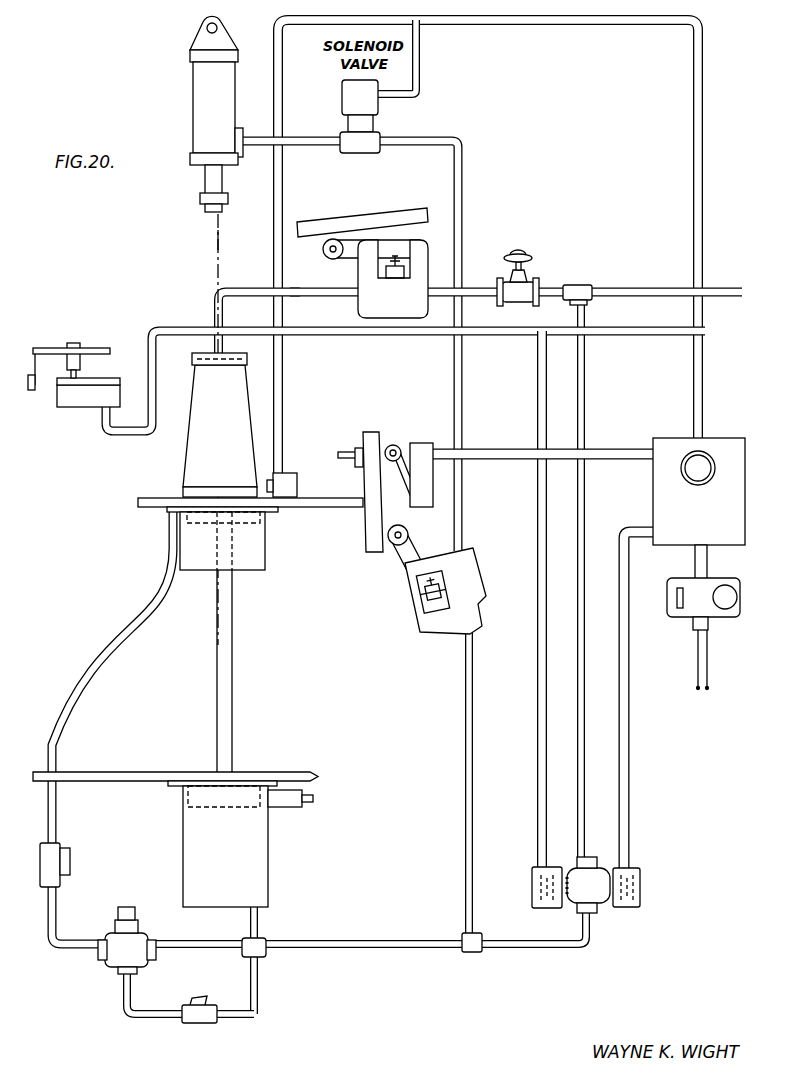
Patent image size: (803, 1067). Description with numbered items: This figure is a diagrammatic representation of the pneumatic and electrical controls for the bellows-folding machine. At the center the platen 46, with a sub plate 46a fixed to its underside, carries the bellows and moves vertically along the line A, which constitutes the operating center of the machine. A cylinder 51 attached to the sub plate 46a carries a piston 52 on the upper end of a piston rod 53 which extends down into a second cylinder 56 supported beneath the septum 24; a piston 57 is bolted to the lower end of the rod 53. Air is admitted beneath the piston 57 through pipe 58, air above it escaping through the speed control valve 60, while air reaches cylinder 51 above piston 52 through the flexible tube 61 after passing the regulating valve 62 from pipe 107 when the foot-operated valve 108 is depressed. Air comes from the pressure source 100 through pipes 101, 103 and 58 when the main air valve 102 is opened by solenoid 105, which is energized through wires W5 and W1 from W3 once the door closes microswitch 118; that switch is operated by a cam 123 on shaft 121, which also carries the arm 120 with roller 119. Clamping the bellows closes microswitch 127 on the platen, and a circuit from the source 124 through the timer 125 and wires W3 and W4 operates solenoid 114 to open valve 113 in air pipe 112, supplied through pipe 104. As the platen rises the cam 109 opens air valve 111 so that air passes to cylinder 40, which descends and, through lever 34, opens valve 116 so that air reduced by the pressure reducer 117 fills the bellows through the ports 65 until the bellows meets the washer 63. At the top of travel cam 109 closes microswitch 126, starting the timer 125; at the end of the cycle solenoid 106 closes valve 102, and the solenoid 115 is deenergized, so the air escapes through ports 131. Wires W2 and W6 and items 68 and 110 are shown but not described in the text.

The septum 24 is at (318, 774).
The lever 34 is at (356, 221).
The cylinder 40 is at (216, 330).
The platen 46 is at (138, 501).
The sub plate 46a is at (170, 513).
The cylinder 51 is at (252, 565).
The piston 52 is at (258, 521).
The piston rod 53 is at (234, 675).
The second cylinder 56 is at (260, 852).
The piston 57 is at (250, 786).
The pipe 58 is at (258, 922).
The speed control valve 60 is at (294, 805).
The flexible tube 61 is at (132, 628).
The regulating valve 62 is at (70, 857).
The washer 63 is at (195, 368).
The ports 65 is at (192, 358).
The pipe 68 is at (248, 292).
The pressure source 100 is at (665, 290).
The pipe 101 is at (586, 498).
The main air valve 102 is at (600, 905).
The pipe 103 is at (518, 950).
The pipe 104 is at (468, 840).
The solenoid 105 is at (534, 872).
The solenoid 106 is at (640, 872).
The pipe 107 is at (186, 945).
The foot-operated valve 108 is at (118, 956).
The cam 109 is at (372, 432).
The roller 110 is at (392, 548).
The air valve 111 is at (445, 591).
The air pipe 112 is at (462, 380).
The valve 113 is at (358, 150).
The solenoid 114 is at (372, 104).
The solenoid 115 is at (330, 260).
The valve 116 is at (393, 279).
The pressure reducer 117 is at (512, 298).
The microswitch 118 is at (88, 392).
The roller 119 is at (32, 392).
The arm 120 is at (36, 348).
The shaft 121 is at (112, 348).
The cam 123 is at (78, 343).
The source 124 is at (708, 661).
The timer 125 is at (699, 491).
The microswitch 126 is at (418, 502).
The microswitch 127 is at (290, 473).
The ports 131 is at (567, 900).
The line A is at (215, 247).
The wire W1 is at (538, 570).
The wire W2 is at (626, 455).
The wire W3 is at (703, 188).
The wire W4 is at (280, 18).
The wire W5 is at (340, 336).
The wire W6 is at (628, 768).